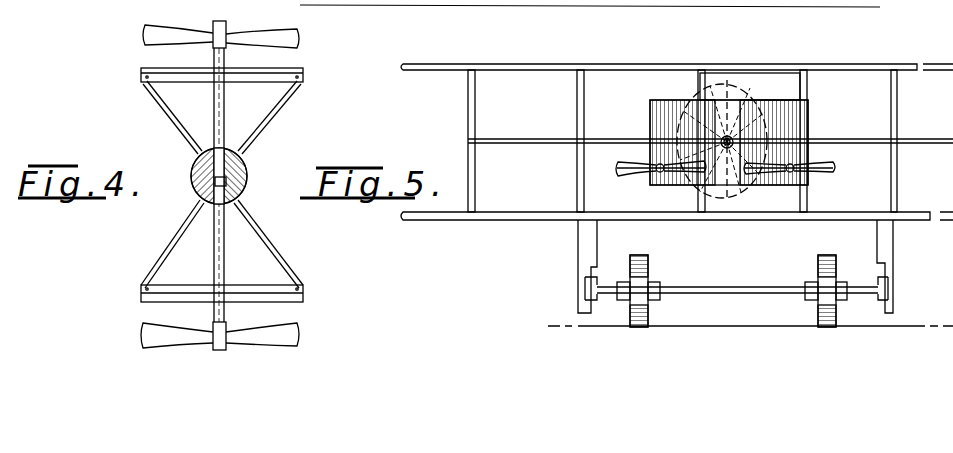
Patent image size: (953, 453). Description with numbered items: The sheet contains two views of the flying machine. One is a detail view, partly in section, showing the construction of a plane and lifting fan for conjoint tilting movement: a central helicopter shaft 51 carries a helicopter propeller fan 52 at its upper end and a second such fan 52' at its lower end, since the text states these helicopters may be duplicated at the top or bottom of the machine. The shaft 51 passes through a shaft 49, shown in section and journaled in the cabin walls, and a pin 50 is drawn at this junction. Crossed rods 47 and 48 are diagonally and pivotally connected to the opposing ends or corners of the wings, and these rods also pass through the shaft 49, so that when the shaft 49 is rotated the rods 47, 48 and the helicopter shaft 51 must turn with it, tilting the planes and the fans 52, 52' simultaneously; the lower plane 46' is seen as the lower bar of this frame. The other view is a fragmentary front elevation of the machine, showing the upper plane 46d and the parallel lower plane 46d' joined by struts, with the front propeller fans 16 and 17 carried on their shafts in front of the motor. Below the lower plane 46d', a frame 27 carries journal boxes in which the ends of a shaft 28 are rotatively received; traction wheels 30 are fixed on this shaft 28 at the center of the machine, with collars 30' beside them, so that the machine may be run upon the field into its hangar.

In FIG. 5, the propeller fan 16 is at (622, 177).
In FIG. 5, the propeller fan 17 is at (836, 170).
In FIG. 5, the frame 27 is at (578, 261).
In FIG. 5, the shaft 28 is at (751, 290).
In FIG. 5, the traction wheel 30 is at (745, 278).
In FIG. 5, the collar 30' is at (742, 278).
In FIG. 5, the upper plane 46d is at (677, 52).
In FIG. 5, the lower plane 46d' is at (677, 232).
In FIG. 4, the lower plane 46' is at (222, 281).
In FIG. 4, the crossed rod 47 is at (170, 112).
In FIG. 4, the crossed rod 48 is at (278, 114).
In FIG. 4, the shaft 49 is at (247, 176).
In FIG. 4, the pin 50 is at (228, 160).
In FIG. 4, the helicopter shaft 51 is at (223, 113).
In FIG. 4, the helicopter propeller fan 52 is at (239, 43).
In FIG. 4, the lower propeller 52' is at (245, 336).